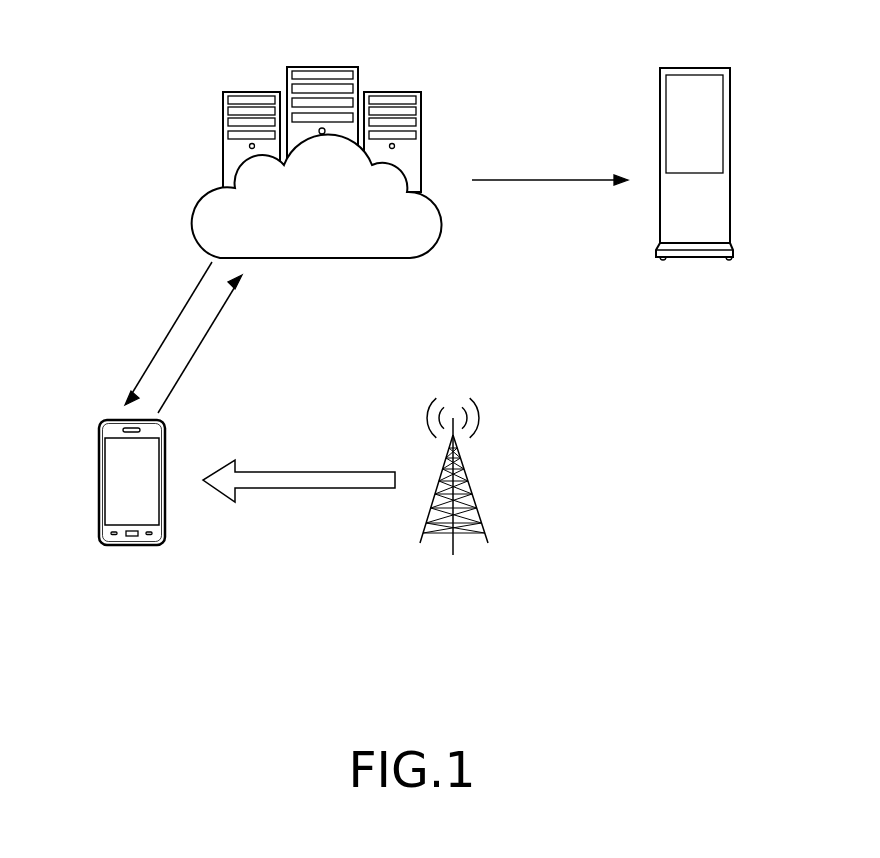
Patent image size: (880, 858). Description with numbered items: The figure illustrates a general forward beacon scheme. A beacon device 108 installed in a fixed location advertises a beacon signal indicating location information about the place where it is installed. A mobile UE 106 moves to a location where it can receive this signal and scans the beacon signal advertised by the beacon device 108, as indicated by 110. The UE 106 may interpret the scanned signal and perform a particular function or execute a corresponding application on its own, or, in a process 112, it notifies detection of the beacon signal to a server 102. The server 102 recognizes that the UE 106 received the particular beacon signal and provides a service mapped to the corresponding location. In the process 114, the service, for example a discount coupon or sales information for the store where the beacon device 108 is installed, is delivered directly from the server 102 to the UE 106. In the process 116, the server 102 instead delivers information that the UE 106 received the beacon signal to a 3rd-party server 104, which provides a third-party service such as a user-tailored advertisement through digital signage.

The server 102 is at (320, 66).
The 3rd-party server 104 is at (694, 67).
The UE 106 is at (98, 485).
The beacon device 108 is at (467, 482).
The beacon signal scanning 110 is at (310, 470).
The process 112 is at (203, 343).
The process 114 is at (167, 333).
The process 116 is at (548, 178).